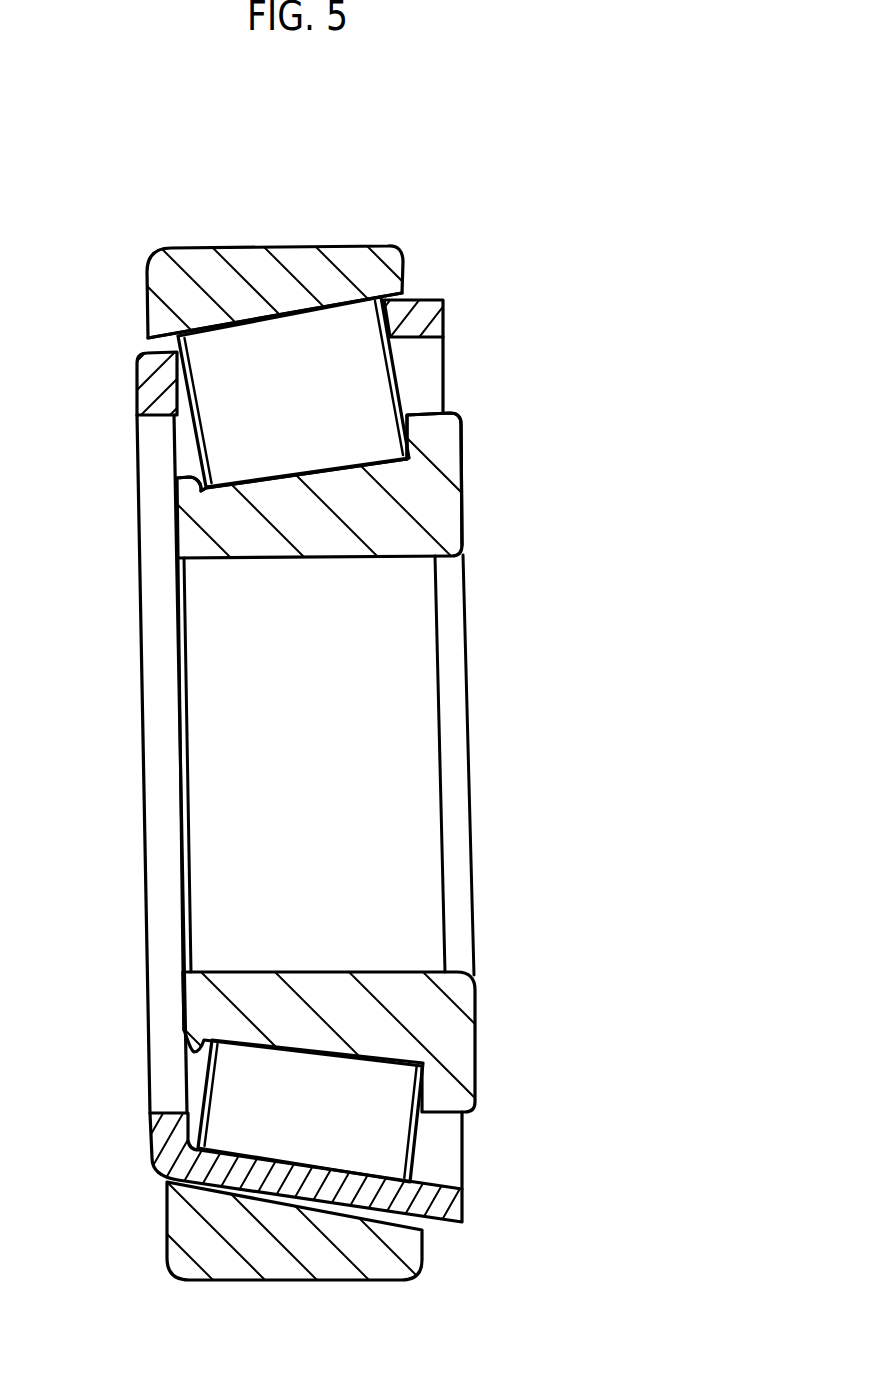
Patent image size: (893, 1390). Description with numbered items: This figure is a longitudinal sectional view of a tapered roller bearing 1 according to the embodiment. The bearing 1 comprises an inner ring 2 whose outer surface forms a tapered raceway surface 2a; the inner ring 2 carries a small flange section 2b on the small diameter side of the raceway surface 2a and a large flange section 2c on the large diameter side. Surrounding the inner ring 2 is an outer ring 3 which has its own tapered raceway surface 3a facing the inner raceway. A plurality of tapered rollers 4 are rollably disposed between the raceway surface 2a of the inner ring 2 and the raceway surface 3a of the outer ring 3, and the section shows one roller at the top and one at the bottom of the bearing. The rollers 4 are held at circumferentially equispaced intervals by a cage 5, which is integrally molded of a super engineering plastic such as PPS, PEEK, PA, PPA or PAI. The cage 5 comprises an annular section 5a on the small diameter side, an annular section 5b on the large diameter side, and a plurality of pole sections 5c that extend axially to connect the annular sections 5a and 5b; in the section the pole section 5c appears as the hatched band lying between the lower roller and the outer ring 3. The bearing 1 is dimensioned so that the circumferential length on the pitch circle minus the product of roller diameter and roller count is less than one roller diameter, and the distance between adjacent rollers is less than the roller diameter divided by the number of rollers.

The tapered roller bearing 1 is at (463, 221).
The inner ring 2 is at (417, 497).
The raceway surface 2a is at (274, 485).
The small flange section 2b is at (177, 482).
The large flange section 2c is at (433, 438).
The outer ring 3 is at (197, 258).
The raceway surface 3a is at (276, 326).
The tapered rollers 4 is at (372, 412).
The cage 5 is at (137, 363).
The annular section 5a is at (148, 400).
The annular section 5b is at (433, 312).
The pole sections 5c is at (316, 1193).